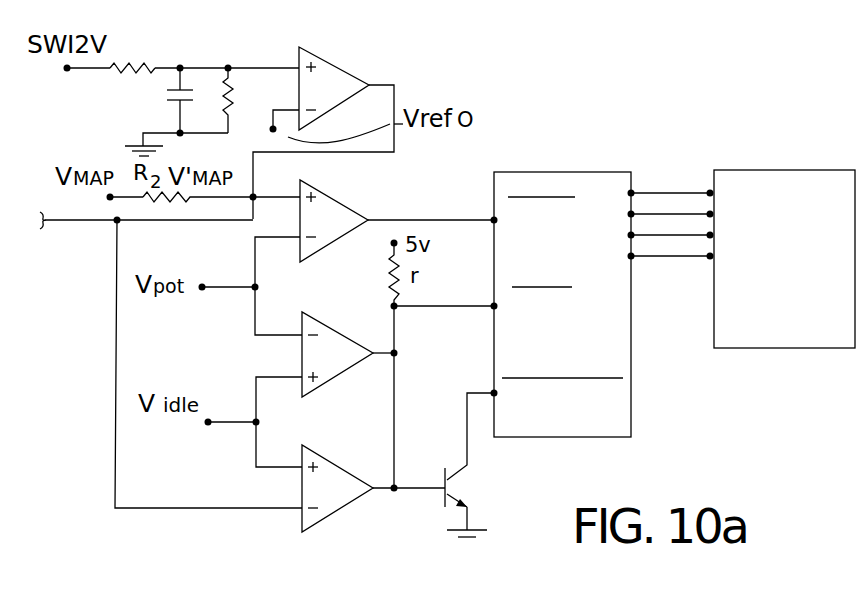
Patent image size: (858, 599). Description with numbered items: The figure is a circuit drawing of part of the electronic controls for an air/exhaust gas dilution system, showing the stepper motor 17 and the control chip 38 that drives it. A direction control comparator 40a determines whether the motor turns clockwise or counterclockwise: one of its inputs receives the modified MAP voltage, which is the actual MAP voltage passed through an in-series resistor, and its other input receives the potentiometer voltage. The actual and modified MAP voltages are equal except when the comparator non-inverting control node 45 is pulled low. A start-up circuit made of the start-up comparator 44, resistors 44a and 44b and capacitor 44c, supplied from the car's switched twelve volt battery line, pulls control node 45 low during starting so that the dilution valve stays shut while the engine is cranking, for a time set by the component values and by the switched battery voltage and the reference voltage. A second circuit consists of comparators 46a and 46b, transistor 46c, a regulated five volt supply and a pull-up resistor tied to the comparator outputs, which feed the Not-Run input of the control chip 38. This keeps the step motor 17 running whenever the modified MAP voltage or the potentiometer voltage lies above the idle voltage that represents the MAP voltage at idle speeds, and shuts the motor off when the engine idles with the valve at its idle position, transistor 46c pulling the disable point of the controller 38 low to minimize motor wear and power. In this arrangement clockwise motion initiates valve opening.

The stepper motor 17 is at (776, 170).
The control chip 38 is at (547, 172).
The direction control comparator 40a is at (334, 221).
The start-up comparator 44 is at (334, 88).
The resistor 44a is at (144, 51).
The resistor 44b is at (256, 100).
The capacitor 44c is at (151, 100).
The comparator non-inverting control node 45 is at (255, 195).
The comparator 46a is at (337, 354).
The comparator 46b is at (337, 488).
The transistor 46c is at (485, 502).